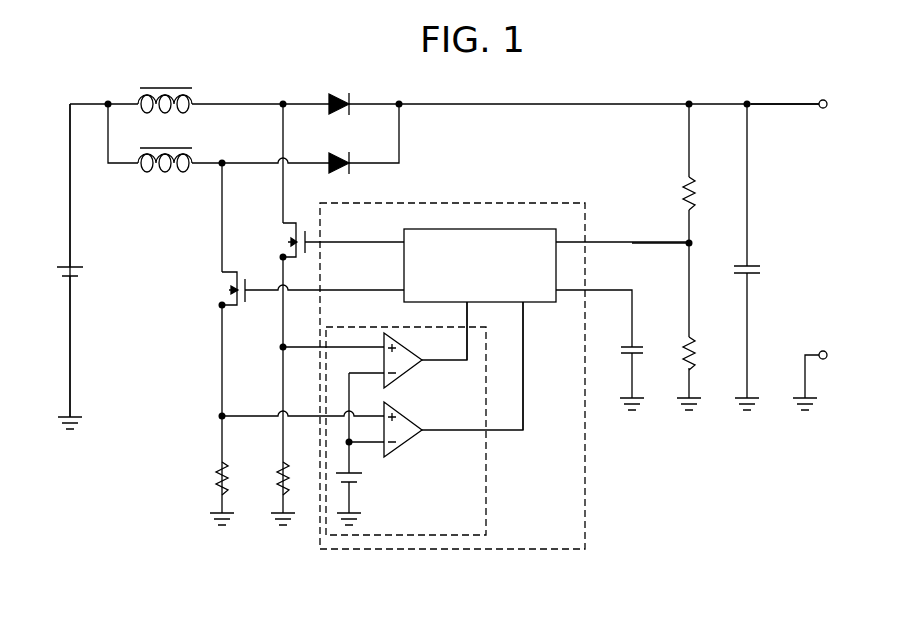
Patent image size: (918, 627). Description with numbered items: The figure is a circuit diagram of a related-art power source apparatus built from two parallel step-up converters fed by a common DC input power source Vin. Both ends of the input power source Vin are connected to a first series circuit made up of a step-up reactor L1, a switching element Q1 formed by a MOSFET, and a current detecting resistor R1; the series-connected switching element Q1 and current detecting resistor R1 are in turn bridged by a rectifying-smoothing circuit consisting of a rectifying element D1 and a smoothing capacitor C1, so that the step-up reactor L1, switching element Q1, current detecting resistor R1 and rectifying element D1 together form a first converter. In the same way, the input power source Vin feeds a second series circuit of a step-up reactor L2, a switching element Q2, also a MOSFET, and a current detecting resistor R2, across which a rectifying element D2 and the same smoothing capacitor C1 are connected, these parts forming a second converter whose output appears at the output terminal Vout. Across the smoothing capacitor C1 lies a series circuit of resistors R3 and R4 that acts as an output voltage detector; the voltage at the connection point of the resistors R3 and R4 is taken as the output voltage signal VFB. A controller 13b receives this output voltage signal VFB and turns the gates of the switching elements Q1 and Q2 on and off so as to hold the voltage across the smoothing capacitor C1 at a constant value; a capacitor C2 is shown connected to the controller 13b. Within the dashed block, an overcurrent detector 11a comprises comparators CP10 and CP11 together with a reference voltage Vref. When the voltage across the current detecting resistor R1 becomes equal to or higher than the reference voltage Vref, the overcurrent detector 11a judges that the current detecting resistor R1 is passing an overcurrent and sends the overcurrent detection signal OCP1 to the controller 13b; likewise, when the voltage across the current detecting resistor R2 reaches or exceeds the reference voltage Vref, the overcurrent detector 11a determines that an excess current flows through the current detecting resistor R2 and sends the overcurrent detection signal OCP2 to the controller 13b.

The controller 13b is at (505, 229).
The overcurrent detector 11a is at (446, 431).
The step-up reactor L1 is at (165, 88).
The step-up reactor L2 is at (165, 148).
The rectifying element D1 is at (343, 91).
The rectifying element D2 is at (343, 151).
The switching element Q1 is at (277, 240).
The switching element Q2 is at (216, 288).
The current detecting resistor R1 is at (268, 478).
The current detecting resistor R2 is at (206, 478).
The resistor R3 is at (706, 193).
The resistor R4 is at (706, 353).
The smoothing capacitor C1 is at (763, 272).
The capacitor C2 is at (620, 350).
The comparator CP10 is at (421, 359).
The comparator CP11 is at (421, 428).
The input power source Vin is at (89, 260).
The output voltage terminal Vout is at (807, 121).
The output voltage signal VFB is at (632, 243).
The reference voltage Vref is at (375, 478).
The overcurrent detection signal OCP1 is at (494, 331).
The overcurrent detection signal OCP2 is at (551, 366).